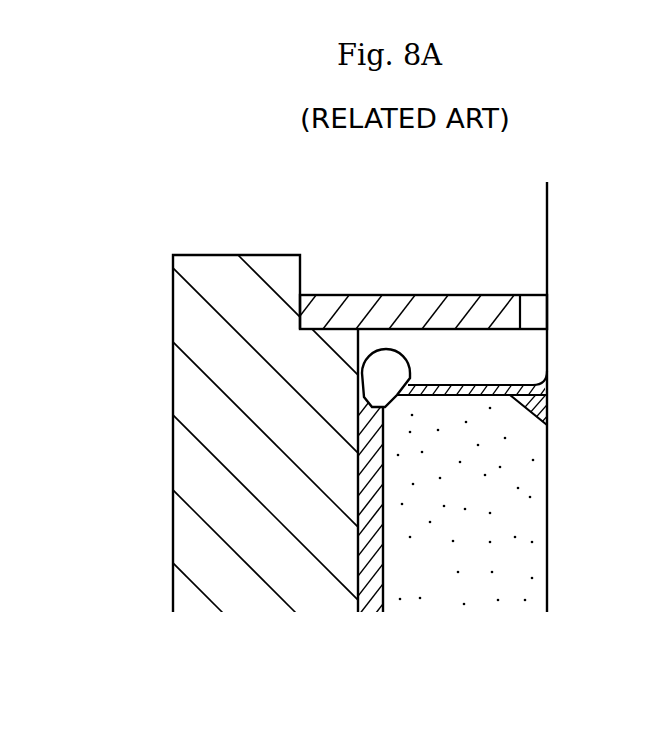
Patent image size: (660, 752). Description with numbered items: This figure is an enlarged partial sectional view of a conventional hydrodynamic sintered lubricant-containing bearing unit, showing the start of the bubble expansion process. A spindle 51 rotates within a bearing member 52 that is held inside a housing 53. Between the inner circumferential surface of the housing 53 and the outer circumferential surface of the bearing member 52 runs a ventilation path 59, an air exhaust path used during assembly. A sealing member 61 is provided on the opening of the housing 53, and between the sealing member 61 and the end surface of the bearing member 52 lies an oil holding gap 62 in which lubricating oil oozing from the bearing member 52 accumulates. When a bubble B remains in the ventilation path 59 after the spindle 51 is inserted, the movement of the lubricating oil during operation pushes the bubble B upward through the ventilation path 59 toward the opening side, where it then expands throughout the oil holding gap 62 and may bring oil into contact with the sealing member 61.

The spindle 51 is at (575, 230).
The bearing member 52 is at (478, 580).
The housing 53 is at (193, 390).
The ventilation path 59 is at (362, 545).
The sealing member 61 is at (347, 293).
The oil holding gap 62 is at (473, 350).
The bubble B is at (382, 365).